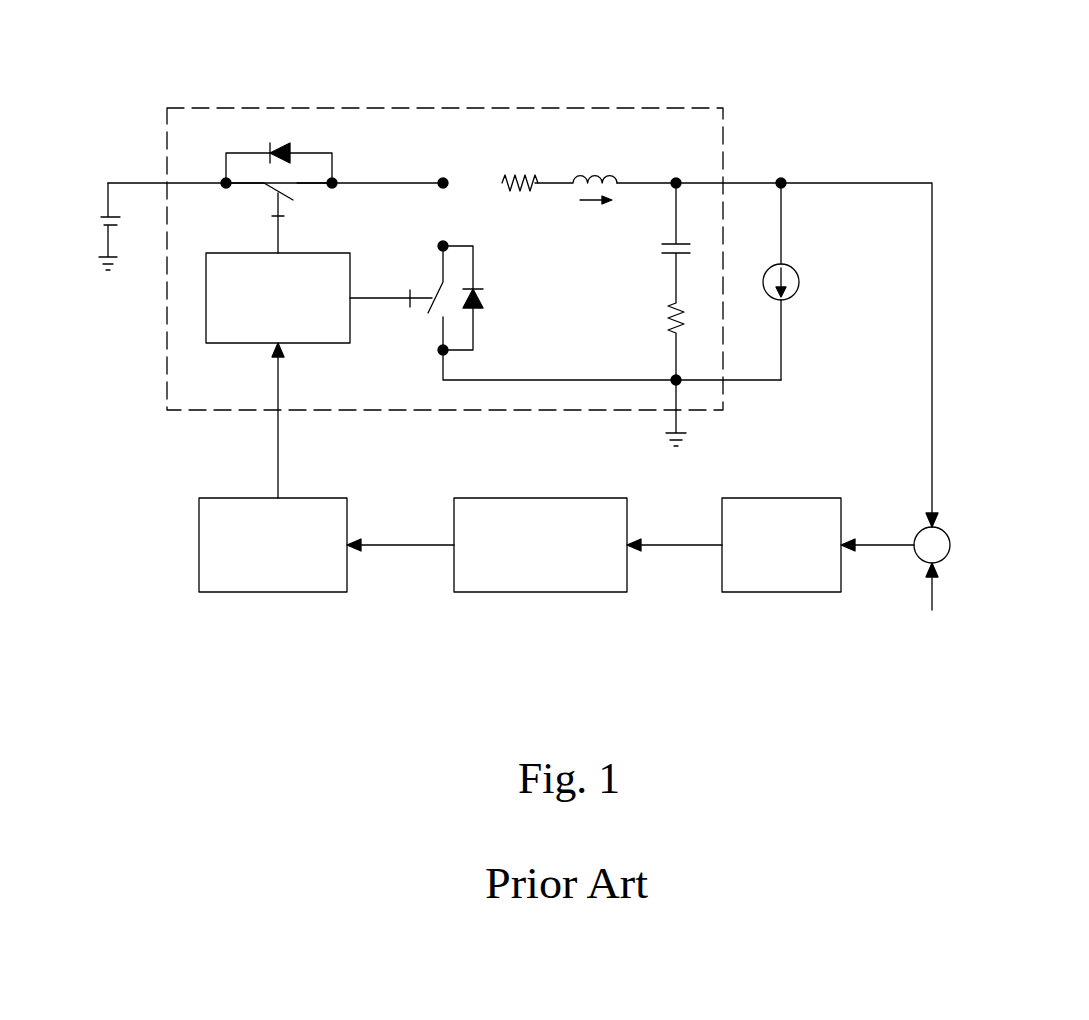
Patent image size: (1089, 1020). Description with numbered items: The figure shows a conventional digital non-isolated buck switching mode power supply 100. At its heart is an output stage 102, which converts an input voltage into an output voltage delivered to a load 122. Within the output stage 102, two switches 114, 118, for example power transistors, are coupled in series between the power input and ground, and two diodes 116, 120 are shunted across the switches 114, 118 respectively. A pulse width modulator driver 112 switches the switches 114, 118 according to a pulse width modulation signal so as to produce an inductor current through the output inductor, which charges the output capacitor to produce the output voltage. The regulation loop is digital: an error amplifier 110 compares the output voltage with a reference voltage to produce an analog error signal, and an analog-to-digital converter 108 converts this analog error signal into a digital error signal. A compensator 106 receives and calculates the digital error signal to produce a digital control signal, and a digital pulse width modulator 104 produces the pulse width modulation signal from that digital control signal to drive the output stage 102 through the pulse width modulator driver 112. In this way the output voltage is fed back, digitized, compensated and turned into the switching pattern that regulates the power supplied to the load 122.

The digital non-isolated buck switching mode power supply 100 is at (1019, 99).
The output stage 102 is at (442, 108).
The digital pulse width modulator 104 is at (272, 592).
The compensator 106 is at (545, 592).
The analog-to-digital converter 108 is at (778, 592).
The error amplifier 110 is at (950, 545).
The pulse width modulator driver 112 is at (248, 343).
The switch 114 is at (313, 201).
The diode 116 is at (280, 137).
The switch 118 is at (418, 333).
The diode 120 is at (487, 300).
The load 122 is at (800, 282).